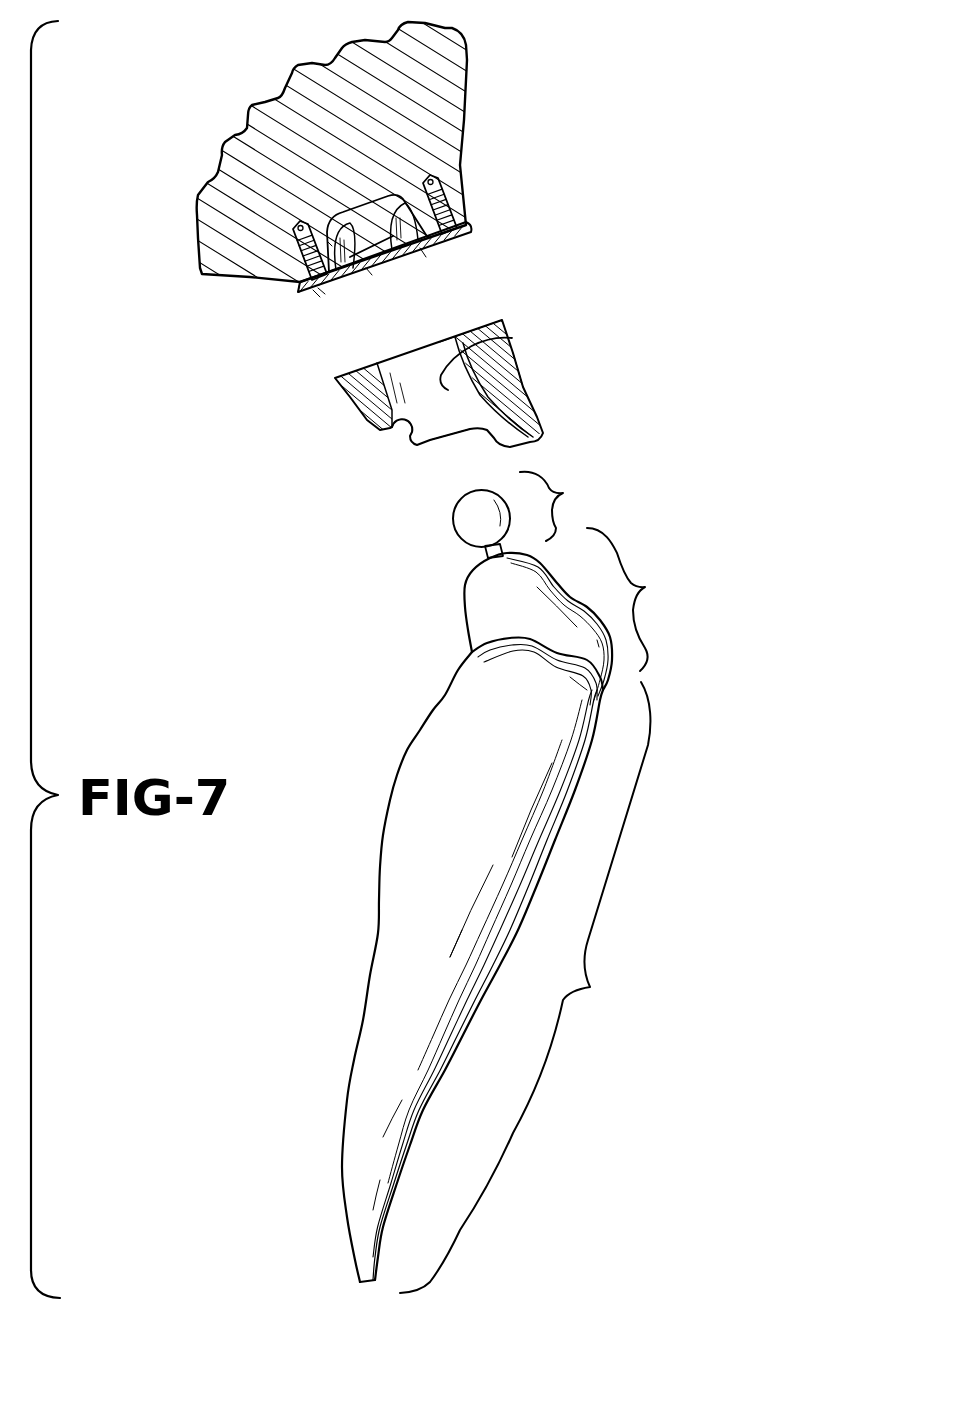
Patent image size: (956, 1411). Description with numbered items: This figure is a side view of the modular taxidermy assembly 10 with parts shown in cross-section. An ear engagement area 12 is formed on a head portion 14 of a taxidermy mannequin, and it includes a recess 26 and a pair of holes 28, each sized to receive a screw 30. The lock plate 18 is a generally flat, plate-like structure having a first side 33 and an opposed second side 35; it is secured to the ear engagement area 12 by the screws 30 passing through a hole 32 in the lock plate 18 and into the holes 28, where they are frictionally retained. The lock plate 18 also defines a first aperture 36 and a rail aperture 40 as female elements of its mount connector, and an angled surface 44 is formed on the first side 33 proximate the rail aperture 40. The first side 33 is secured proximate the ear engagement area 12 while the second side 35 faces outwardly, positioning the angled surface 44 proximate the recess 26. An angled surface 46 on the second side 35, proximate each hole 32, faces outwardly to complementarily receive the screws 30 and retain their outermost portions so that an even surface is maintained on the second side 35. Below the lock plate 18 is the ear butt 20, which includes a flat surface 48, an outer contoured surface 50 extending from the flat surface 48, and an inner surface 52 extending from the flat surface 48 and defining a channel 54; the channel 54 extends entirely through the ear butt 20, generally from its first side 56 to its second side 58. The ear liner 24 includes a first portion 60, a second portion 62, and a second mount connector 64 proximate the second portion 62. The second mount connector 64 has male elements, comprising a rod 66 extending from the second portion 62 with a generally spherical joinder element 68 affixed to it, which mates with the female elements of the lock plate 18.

The modular taxidermy assembly 10 is at (626, 248).
The ear engagement area 12 is at (476, 231).
The head portion 14 is at (480, 87).
The lock plate 18 is at (296, 300).
The ear butt 20 is at (348, 412).
The ear liner 24 is at (378, 934).
The recess 26 is at (368, 222).
The holes 28 is at (300, 225).
The screw 30 is at (304, 281).
The hole 32 is at (318, 291).
The first side 33 is at (331, 245).
The second side 35 is at (420, 243).
The first aperture 36 is at (368, 270).
The rail aperture 40 is at (355, 255).
The angled surface 44 is at (393, 247).
The angled surface 46 is at (314, 292).
The flat surface 48 is at (346, 372).
The outer contoured surface 50 is at (524, 384).
The inner surface 52 is at (406, 432).
The channel 54 is at (512, 338).
The first side 56 is at (480, 314).
The second side 58 is at (441, 450).
The first portion 60 is at (604, 999).
The second portion 62 is at (657, 578).
The second mount connector 64 is at (576, 487).
The rod 66 is at (484, 557).
The spherical joinder element 68 is at (455, 517).